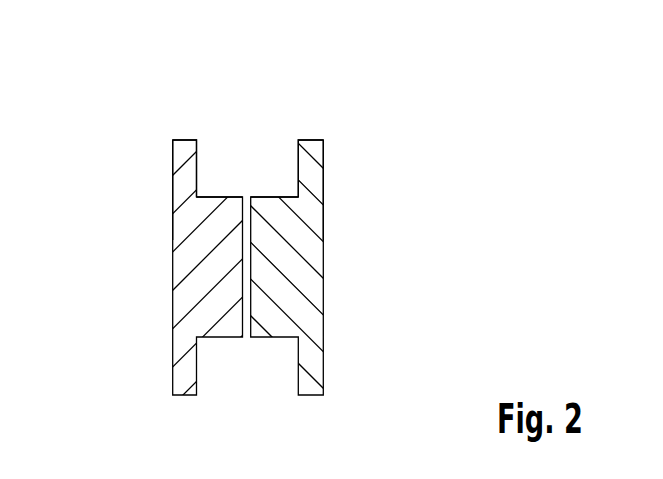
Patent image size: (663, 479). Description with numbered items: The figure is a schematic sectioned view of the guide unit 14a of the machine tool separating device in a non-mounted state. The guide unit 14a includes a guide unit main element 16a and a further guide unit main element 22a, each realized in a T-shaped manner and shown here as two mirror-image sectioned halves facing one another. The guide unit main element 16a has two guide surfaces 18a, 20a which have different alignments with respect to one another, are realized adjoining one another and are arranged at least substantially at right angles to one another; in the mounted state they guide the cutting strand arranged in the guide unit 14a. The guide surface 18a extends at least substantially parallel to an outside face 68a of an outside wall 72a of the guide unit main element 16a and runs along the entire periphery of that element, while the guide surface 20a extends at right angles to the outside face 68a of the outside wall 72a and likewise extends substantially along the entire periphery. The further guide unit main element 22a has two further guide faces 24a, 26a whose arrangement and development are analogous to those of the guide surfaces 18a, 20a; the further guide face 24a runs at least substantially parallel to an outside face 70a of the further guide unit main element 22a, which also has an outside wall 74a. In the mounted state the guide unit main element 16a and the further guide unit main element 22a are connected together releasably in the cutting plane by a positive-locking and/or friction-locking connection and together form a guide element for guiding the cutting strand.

The guide unit 14a is at (372, 93).
The guide unit main element 16a is at (299, 248).
The guide surface 18a is at (300, 166).
The guide surface 20a is at (270, 196).
The further guide unit main element 22a is at (196, 248).
The further guide face 24a is at (197, 167).
The further guide face 26a is at (218, 182).
The outside face 68a is at (322, 172).
The outside face 70a is at (178, 173).
The outside wall 72a is at (323, 204).
The outside wall 74a is at (179, 214).